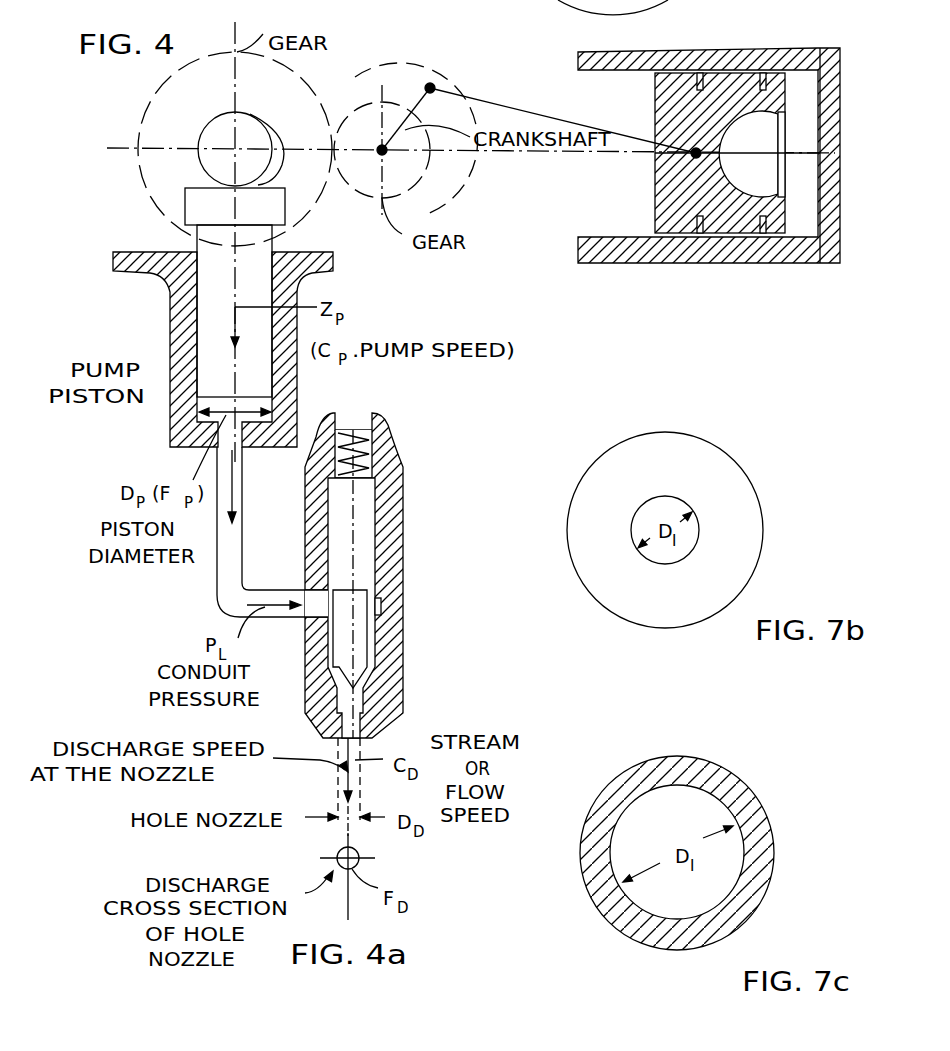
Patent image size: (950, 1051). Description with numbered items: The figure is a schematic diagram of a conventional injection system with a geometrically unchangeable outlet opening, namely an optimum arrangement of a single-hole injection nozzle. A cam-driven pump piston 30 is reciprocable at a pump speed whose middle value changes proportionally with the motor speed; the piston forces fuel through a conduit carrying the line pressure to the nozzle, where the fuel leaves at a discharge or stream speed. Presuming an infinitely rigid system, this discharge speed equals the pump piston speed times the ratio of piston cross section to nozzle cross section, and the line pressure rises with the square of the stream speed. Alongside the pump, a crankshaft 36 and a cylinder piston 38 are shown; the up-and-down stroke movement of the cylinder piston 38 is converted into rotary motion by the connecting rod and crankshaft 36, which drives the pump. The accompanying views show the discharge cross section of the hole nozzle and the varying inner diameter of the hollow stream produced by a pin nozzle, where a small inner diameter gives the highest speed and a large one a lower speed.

The pump piston 30 is at (208, 275).
The crankshaft 36 is at (417, 106).
The cylinder piston 38 is at (718, 90).